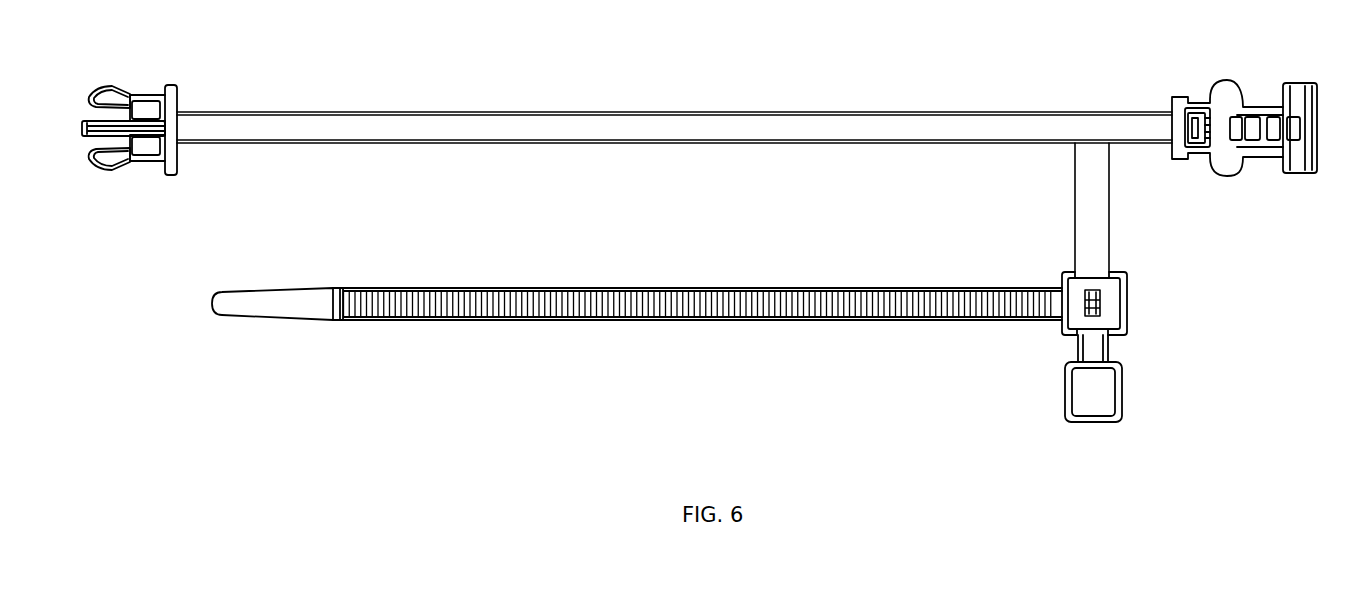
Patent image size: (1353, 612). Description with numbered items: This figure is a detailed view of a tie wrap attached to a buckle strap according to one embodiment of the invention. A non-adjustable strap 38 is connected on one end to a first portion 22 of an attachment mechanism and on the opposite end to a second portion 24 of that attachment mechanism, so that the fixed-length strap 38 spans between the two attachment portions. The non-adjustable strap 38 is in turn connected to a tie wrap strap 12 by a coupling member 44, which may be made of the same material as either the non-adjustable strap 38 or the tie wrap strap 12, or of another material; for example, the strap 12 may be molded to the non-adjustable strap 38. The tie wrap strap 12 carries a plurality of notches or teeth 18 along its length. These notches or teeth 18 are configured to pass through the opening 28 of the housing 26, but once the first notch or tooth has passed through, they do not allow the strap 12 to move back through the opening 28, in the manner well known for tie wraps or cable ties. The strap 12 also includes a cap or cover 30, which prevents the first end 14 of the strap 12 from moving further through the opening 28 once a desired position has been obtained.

The tie wrap strap 12 is at (732, 323).
The first end 14 is at (268, 352).
The notches or teeth 18 is at (503, 307).
The first portion 22 is at (152, 97).
The second portion 24 is at (1286, 103).
The housing 26 is at (1118, 315).
The opening 28 is at (1103, 303).
The cap or cover 30 is at (1105, 404).
The non-adjustable strap 38 is at (662, 127).
The coupling member 44 is at (1082, 228).